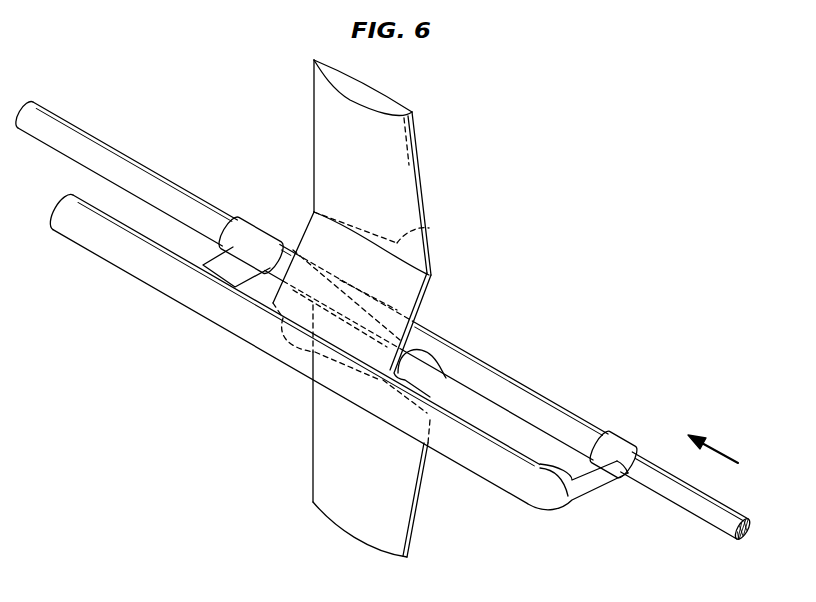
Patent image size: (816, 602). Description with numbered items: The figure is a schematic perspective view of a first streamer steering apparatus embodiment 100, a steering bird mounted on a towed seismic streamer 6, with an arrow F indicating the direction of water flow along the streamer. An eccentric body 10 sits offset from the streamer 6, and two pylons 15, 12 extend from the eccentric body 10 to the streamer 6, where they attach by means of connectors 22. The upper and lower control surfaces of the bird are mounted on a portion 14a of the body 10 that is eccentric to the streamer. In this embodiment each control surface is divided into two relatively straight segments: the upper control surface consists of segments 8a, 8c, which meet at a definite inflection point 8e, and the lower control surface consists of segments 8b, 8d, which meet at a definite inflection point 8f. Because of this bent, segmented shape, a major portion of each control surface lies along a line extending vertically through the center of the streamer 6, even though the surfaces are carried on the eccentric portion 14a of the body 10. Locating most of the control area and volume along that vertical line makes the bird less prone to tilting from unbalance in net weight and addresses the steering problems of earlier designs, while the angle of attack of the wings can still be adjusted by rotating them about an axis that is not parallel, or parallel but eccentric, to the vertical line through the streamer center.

The streamer steering apparatus embodiment 100 is at (496, 130).
The streamer 6 is at (681, 513).
The eccentric body 10 is at (484, 476).
The pylon 12 is at (593, 470).
The portion of body 14a is at (428, 377).
The pylon 15 is at (229, 262).
The connector 22 is at (268, 243).
The control surface segment 8a is at (330, 97).
The control surface segment 8b is at (330, 470).
The control surface segment 8c is at (421, 291).
The control surface segment 8d is at (300, 346).
The inflection point 8e is at (418, 231).
The inflection point 8f is at (353, 392).